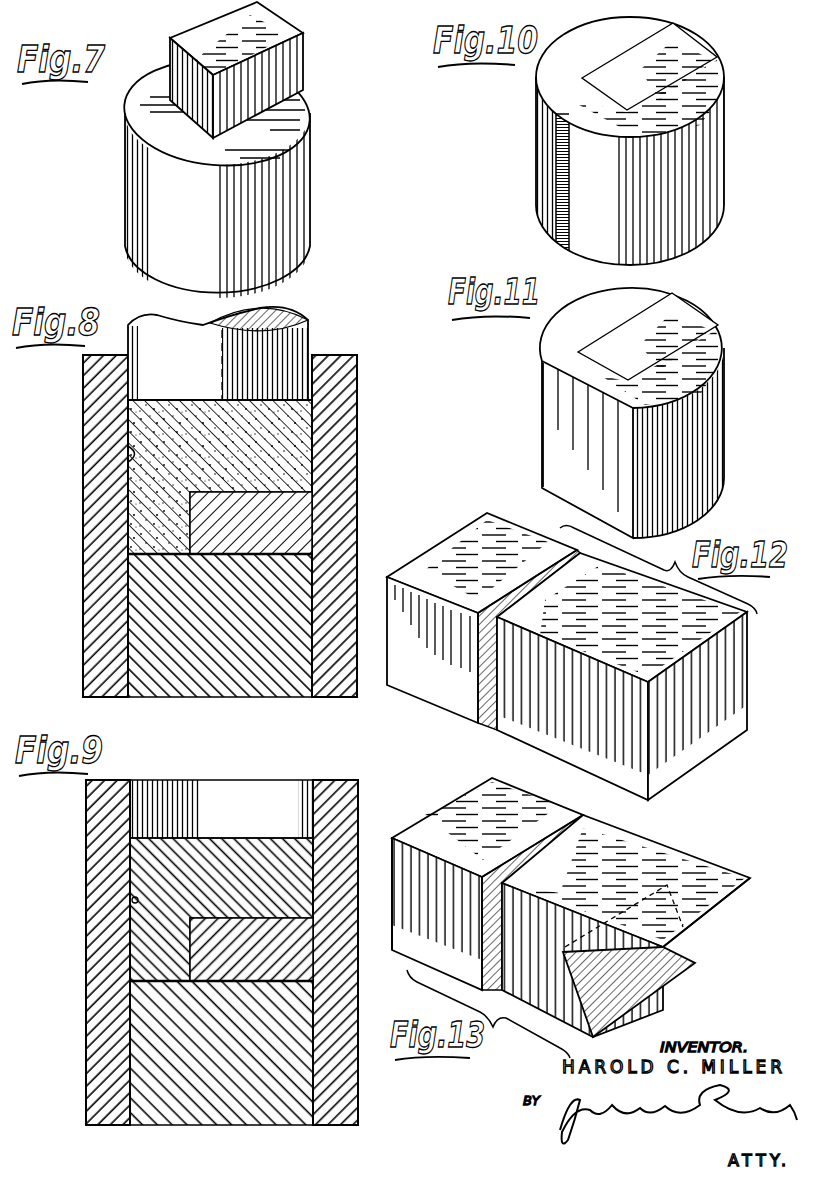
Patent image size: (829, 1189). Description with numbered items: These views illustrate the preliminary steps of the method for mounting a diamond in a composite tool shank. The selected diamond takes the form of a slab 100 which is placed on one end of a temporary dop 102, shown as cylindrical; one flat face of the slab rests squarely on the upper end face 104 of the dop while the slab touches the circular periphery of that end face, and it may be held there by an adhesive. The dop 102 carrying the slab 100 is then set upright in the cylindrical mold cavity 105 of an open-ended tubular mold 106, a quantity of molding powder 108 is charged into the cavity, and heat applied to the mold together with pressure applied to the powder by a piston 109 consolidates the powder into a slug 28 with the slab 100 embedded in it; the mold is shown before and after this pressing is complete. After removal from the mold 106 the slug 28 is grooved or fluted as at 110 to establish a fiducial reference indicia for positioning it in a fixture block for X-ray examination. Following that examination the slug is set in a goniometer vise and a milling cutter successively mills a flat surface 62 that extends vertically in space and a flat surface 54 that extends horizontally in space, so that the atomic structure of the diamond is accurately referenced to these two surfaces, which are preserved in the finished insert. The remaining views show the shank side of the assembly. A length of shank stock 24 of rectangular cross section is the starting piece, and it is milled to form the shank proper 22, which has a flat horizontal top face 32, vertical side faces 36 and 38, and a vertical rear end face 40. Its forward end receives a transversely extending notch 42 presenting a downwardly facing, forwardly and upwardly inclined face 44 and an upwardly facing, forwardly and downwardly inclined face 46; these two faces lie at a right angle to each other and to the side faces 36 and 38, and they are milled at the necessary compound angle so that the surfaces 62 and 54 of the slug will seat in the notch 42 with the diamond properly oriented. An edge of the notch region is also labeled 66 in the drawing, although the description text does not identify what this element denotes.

In FIG. 7, the diamond slab 100 is at (306, 61).
In FIG. 10, the diamond slab 100 is at (664, 48).
In FIG. 11, the diamond slab 100 is at (675, 316).
In FIG. 8, the diamond slab 100 is at (198, 512).
In FIG. 9, the diamond slab 100 is at (195, 942).
In FIG. 7, the temporary dop 102 is at (200, 232).
In FIG. 8, the temporary dop 102 is at (217, 680).
In FIG. 9, the temporary dop 102 is at (188, 1110).
In FIG. 7, the upper end face of the dop 104 is at (275, 136).
In FIG. 8, the upper end face of the dop 104 is at (150, 554).
In FIG. 9, the upper end face of the dop 104 is at (152, 981).
In FIG. 8, the cylindrical mold cavity 105 is at (127, 453).
In FIG. 9, the cylindrical mold cavity 105 is at (132, 900).
In FIG. 8, the tubular mold 106 is at (338, 513).
In FIG. 9, the tubular mold 106 is at (93, 880).
In FIG. 8, the molding powder 108 is at (290, 442).
In FIG. 8, the piston 109 is at (288, 343).
In FIG. 10, the groove or flute 110 is at (560, 185).
In FIG. 10, the hot-pressed slug 28 is at (618, 206).
In FIG. 11, the hot-pressed slug 28 is at (575, 481).
In FIG. 9, the hot-pressed slug 28 is at (232, 845).
In FIG. 11, the flat surface 54 is at (555, 340).
In FIG. 11, the flat surface 62 is at (553, 410).
In FIG. 12, the shank stock 24 is at (445, 688).
In FIG. 13, the shank proper 22 is at (475, 880).
In FIG. 13, the top face 32 is at (455, 818).
In FIG. 13, the side face 36 is at (408, 897).
In FIG. 13, the rear end face 40 is at (390, 850).
In FIG. 13, the side face 38 is at (583, 818).
In FIG. 13, the notch 42 is at (644, 890).
In FIG. 13, the inclined face 44 is at (592, 945).
In FIG. 13, the inclined face 46 is at (645, 985).
In FIG. 13, the plate edge 66 is at (717, 897).